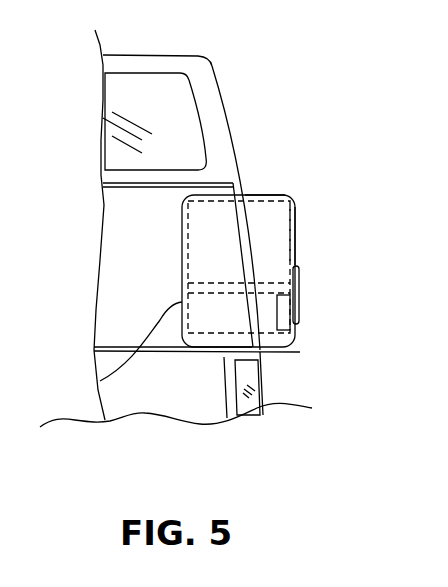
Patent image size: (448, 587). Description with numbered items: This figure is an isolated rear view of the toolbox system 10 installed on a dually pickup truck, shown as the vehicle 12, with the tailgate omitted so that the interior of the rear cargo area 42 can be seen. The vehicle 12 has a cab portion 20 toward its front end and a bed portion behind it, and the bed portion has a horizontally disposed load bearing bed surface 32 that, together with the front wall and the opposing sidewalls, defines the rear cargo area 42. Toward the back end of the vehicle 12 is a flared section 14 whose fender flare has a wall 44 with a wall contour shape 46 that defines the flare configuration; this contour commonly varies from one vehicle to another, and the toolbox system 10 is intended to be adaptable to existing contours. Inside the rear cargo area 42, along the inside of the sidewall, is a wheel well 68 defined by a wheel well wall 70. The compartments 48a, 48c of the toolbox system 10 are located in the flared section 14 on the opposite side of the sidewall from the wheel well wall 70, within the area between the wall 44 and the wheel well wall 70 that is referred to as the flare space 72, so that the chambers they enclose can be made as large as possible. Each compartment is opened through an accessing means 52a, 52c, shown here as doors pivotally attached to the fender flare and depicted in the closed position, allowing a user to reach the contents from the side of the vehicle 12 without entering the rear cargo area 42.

The toolbox system 10 is at (357, 197).
The vehicle 12 is at (255, 130).
The flared section 14 is at (318, 305).
The cab portion 20 is at (223, 62).
The bed surface 32 is at (118, 343).
The rear cargo area 42 is at (132, 283).
The wall 44 is at (296, 222).
The wall contour shape 46 is at (297, 248).
The compartment 48a is at (280, 278).
The compartment 48c is at (212, 311).
The accessing means 52a is at (275, 193).
The accessing means 52c is at (290, 325).
The wheel well 68 is at (180, 224).
The wheel well wall 70 is at (100, 381).
The flare space 72 is at (202, 345).